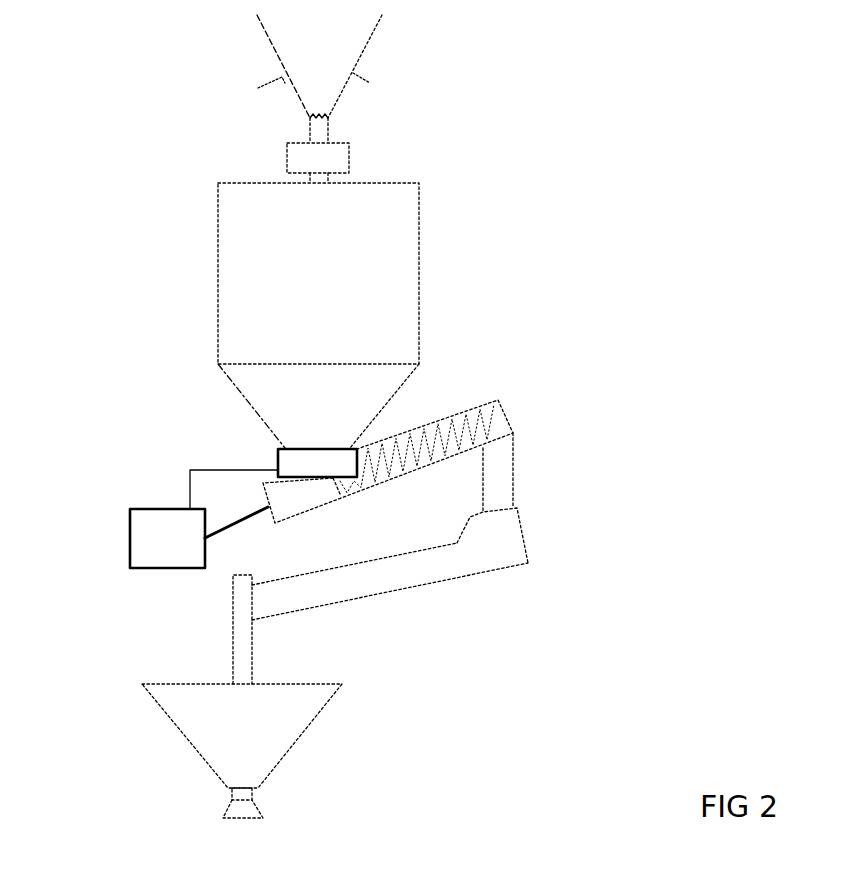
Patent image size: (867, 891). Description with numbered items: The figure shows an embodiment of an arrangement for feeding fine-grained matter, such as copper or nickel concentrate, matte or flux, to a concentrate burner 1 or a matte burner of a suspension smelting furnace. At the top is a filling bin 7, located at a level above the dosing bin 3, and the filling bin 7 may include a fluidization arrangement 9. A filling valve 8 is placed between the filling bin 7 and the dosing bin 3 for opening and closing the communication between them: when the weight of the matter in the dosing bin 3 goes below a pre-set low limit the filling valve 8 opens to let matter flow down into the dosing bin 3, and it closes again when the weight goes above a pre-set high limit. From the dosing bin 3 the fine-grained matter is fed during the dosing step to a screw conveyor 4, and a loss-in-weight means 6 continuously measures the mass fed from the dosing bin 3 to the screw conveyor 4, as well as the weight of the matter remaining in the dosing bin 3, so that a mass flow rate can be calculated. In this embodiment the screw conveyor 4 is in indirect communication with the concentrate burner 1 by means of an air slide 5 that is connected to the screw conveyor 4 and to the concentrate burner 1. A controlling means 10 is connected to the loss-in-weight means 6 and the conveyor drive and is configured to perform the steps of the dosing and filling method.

The concentrate burner 1 is at (283, 742).
The dosing bin 3 is at (243, 277).
The screw conveyor 4 is at (500, 420).
The air slide 5 is at (460, 565).
The loss-in-weight means 6 is at (287, 461).
The filling bin 7 is at (287, 42).
The filling valve 8 is at (300, 158).
The fluidization arrangement 9 is at (360, 83).
The controlling means 10 is at (140, 542).